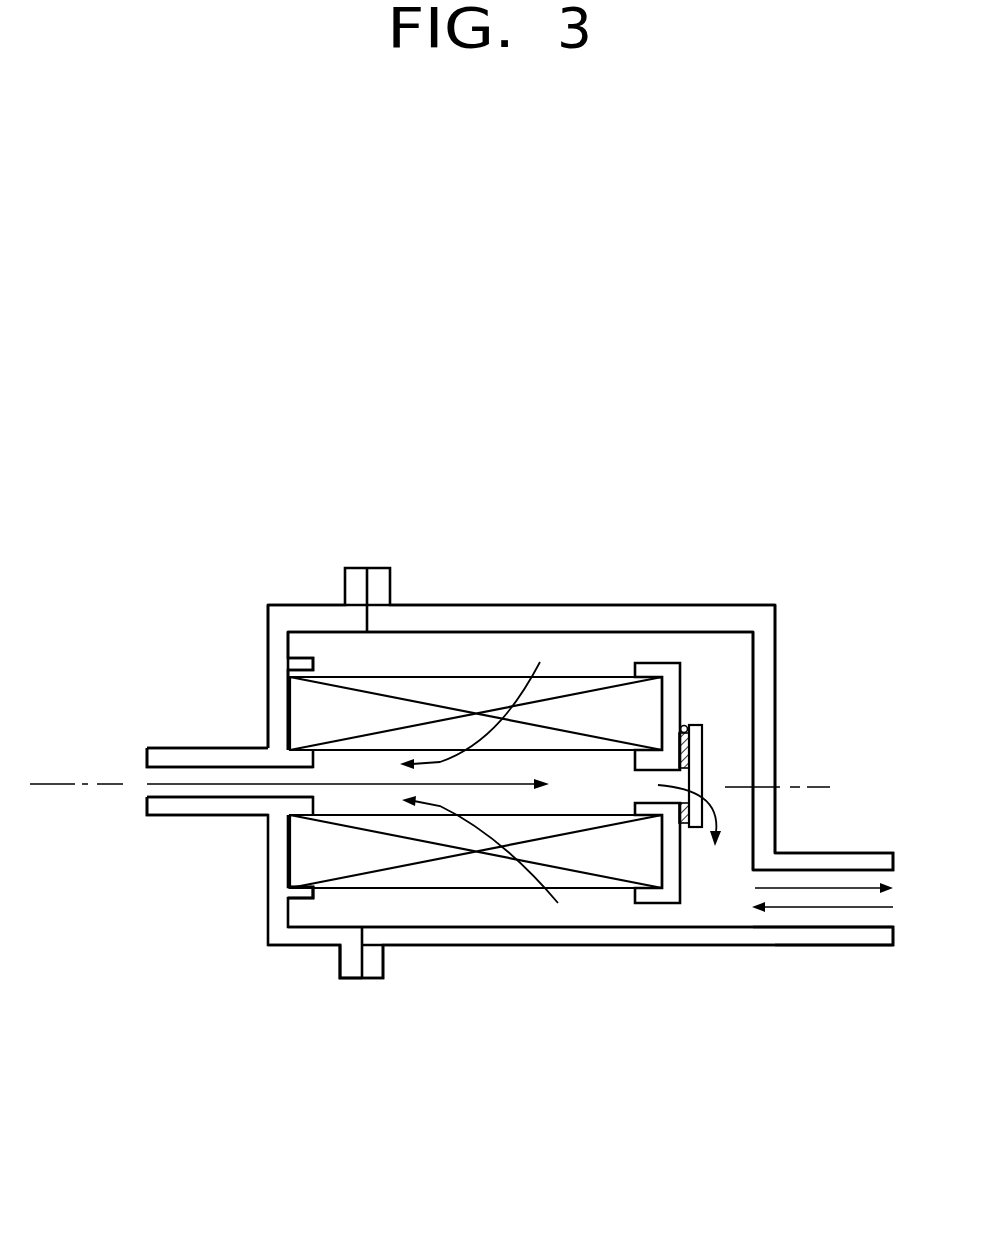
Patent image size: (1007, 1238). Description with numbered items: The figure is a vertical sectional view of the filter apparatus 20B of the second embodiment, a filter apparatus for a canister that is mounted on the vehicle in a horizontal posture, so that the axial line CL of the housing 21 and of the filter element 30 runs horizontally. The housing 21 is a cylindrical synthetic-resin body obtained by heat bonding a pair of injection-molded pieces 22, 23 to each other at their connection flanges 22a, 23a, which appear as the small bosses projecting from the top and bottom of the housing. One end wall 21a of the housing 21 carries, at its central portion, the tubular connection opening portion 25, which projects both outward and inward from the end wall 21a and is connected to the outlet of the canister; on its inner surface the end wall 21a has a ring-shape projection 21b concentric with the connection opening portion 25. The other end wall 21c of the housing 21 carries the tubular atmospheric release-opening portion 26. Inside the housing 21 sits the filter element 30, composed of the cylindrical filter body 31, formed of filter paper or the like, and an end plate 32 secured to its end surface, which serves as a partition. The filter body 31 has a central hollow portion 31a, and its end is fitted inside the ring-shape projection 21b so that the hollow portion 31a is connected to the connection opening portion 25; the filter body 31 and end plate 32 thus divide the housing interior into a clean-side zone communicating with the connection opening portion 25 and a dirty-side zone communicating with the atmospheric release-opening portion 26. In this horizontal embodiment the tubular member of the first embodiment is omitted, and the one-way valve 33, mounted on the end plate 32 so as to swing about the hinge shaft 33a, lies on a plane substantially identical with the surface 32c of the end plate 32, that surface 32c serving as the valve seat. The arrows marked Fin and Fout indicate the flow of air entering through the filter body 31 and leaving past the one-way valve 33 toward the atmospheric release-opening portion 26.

The filter apparatus 20B is at (272, 395).
The housing 21 is at (469, 598).
The end wall 21a is at (275, 693).
The ring-shape projection 21b is at (297, 895).
The other end wall 21c is at (765, 720).
The housing piece 22 is at (295, 942).
The connection flange 22a is at (348, 962).
The housing piece 23 is at (447, 946).
The connection flange 23a is at (373, 959).
The connection opening portion 25 is at (213, 757).
The atmospheric release-opening portion 26 is at (853, 937).
The filter element 30 is at (584, 808).
The filter body 31 is at (480, 878).
The hollow portion 31a is at (583, 777).
The end plate 32 is at (678, 885).
The surface of the end plate 32c is at (683, 826).
The one-way valve 33 is at (697, 775).
The hinge shaft 33a is at (707, 727).
The axial line CL is at (52, 782).
The inflow fluid Fin is at (504, 782).
The outflow fluid Fout is at (702, 835).